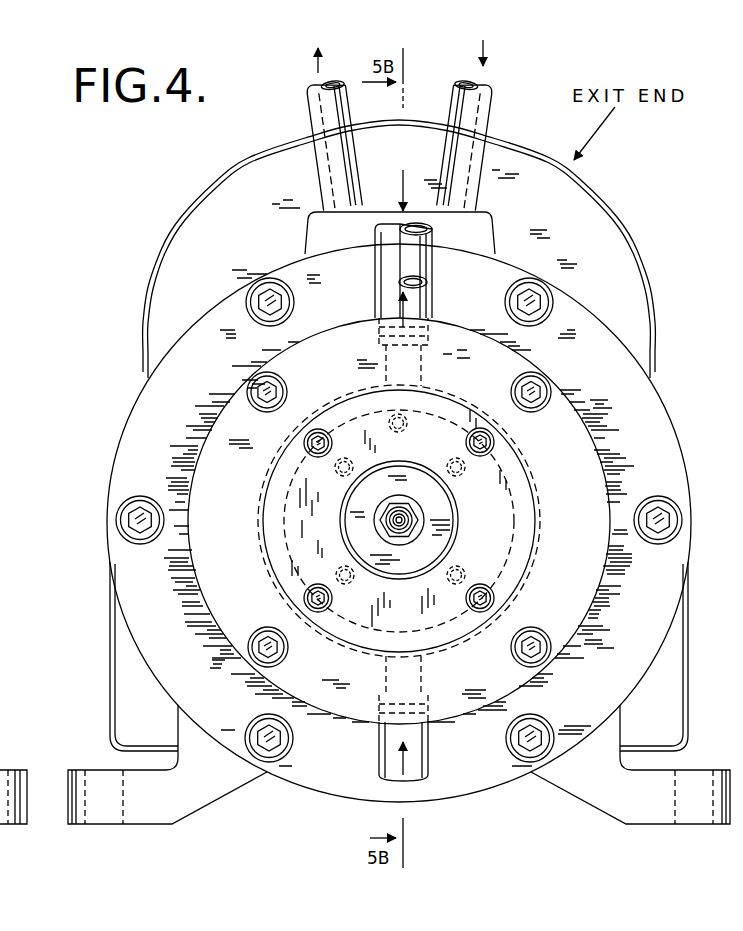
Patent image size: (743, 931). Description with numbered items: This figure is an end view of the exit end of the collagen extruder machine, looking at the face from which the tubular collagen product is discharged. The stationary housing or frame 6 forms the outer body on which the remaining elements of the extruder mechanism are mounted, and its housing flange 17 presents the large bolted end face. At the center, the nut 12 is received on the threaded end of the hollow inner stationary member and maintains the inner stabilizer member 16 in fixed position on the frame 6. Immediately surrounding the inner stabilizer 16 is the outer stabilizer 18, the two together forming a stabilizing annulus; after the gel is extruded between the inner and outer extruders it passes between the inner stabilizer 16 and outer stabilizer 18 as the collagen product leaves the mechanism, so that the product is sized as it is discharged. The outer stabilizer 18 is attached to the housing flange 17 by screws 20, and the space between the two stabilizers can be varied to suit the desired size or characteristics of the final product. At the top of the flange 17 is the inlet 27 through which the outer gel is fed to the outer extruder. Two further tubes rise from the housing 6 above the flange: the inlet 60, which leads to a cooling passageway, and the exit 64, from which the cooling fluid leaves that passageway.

The stationary housing or frame 6 is at (616, 203).
The nut 12 is at (402, 506).
The inner stabilizer member 16 is at (438, 510).
The housing flange 17 is at (218, 602).
The outer stabilizer 18 is at (297, 497).
The screws 20 is at (318, 432).
The inlet 27 is at (390, 266).
The inlet 60 is at (478, 100).
The exit 64 is at (320, 101).